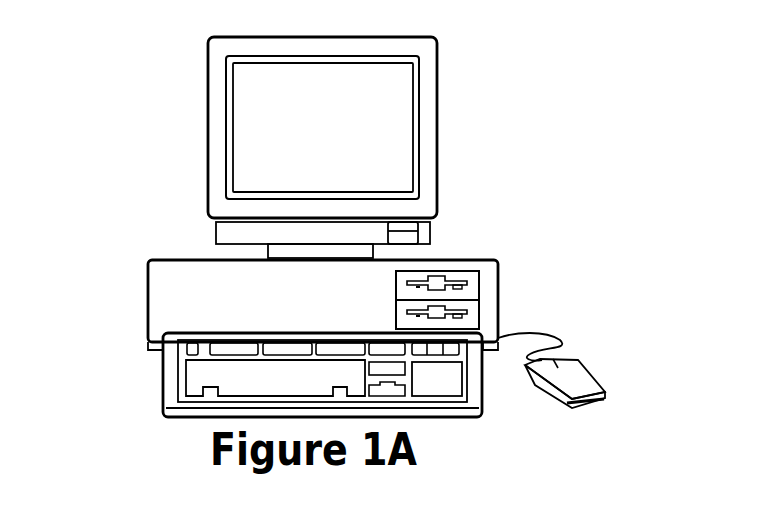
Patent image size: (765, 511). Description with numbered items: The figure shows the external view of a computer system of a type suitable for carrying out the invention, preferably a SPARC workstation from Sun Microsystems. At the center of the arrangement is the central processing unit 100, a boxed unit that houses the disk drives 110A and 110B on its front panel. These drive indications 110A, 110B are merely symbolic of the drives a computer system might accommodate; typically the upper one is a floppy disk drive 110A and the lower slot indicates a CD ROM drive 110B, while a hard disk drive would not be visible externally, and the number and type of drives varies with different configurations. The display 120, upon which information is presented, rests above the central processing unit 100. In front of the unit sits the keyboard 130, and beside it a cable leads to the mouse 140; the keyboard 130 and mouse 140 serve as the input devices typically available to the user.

The central processing unit 100 is at (138, 276).
The disk drive 110A is at (388, 283).
The disk drive 110B is at (388, 322).
The display 120 is at (437, 130).
The keyboard 130 is at (153, 386).
The mouse 140 is at (597, 376).